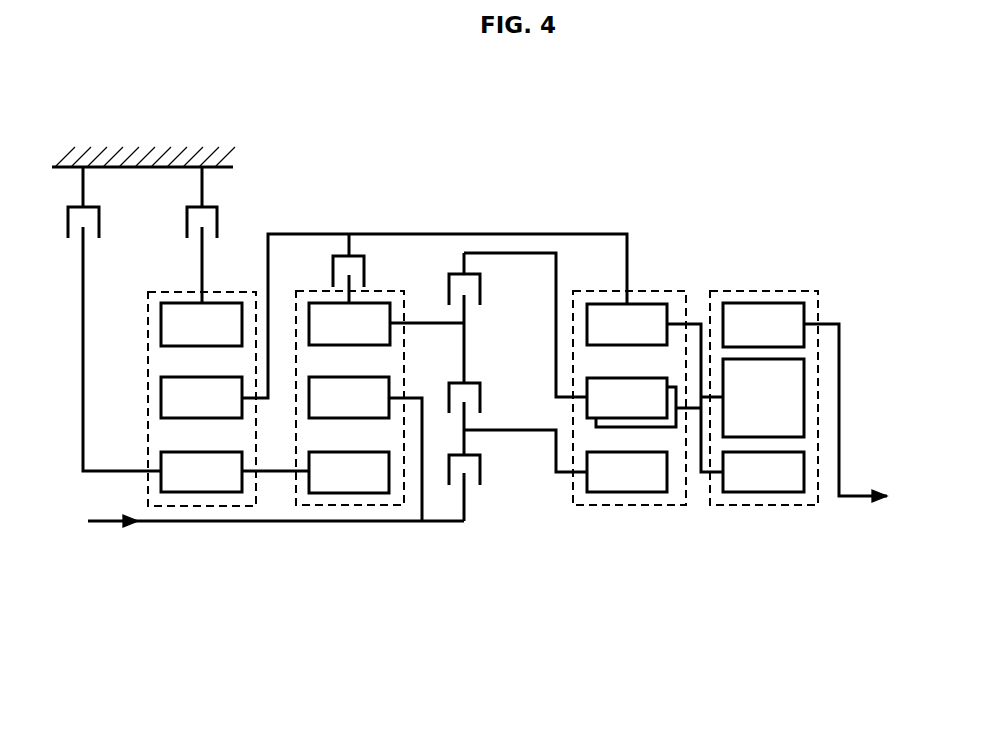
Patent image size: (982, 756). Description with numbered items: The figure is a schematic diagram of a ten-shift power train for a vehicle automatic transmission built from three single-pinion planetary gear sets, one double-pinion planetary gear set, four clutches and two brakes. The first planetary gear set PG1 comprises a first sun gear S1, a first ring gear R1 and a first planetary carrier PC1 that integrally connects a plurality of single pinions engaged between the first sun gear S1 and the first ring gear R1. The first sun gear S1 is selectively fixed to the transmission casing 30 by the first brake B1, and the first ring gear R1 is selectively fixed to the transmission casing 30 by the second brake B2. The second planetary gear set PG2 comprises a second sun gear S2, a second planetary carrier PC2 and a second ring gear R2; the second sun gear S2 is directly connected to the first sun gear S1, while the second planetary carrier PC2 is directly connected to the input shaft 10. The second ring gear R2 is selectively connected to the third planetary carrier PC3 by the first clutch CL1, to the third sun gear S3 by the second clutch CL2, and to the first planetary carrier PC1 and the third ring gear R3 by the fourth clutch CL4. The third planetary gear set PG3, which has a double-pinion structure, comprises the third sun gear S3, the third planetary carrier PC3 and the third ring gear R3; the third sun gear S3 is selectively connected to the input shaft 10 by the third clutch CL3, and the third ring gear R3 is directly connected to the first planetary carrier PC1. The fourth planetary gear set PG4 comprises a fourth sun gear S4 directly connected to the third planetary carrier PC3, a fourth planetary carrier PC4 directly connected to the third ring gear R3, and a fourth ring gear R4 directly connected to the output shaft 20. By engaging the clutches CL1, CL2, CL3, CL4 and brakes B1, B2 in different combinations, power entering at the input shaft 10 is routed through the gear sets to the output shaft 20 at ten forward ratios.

The transmission casing 30 is at (145, 158).
The first brake B1 is at (98, 319).
The second brake B2 is at (185, 235).
The first ring gear R1 is at (161, 323).
The second ring gear R2 is at (383, 300).
The third ring gear R3 is at (650, 300).
The fourth ring gear R4 is at (775, 300).
The first sun gear S1 is at (200, 494).
The second sun gear S2 is at (350, 495).
The third sun gear S3 is at (632, 494).
The fourth sun gear S4 is at (770, 494).
The first planetary carrier PC1 is at (275, 402).
The second planetary carrier PC2 is at (412, 402).
The third planetary carrier PC3 is at (693, 412).
The fourth planetary carrier PC4 is at (714, 402).
The first planetary gear set PG1 is at (369, 445).
The second planetary gear set PG2 is at (379, 427).
The third planetary gear set PG3 is at (647, 448).
The fourth planetary gear set PG4 is at (760, 448).
The first clutch CL1 is at (518, 325).
The second clutch CL2 is at (518, 427).
The third clutch CL3 is at (490, 488).
The fourth clutch CL4 is at (323, 268).
The input shaft 10 is at (107, 525).
The output shaft 20 is at (868, 500).